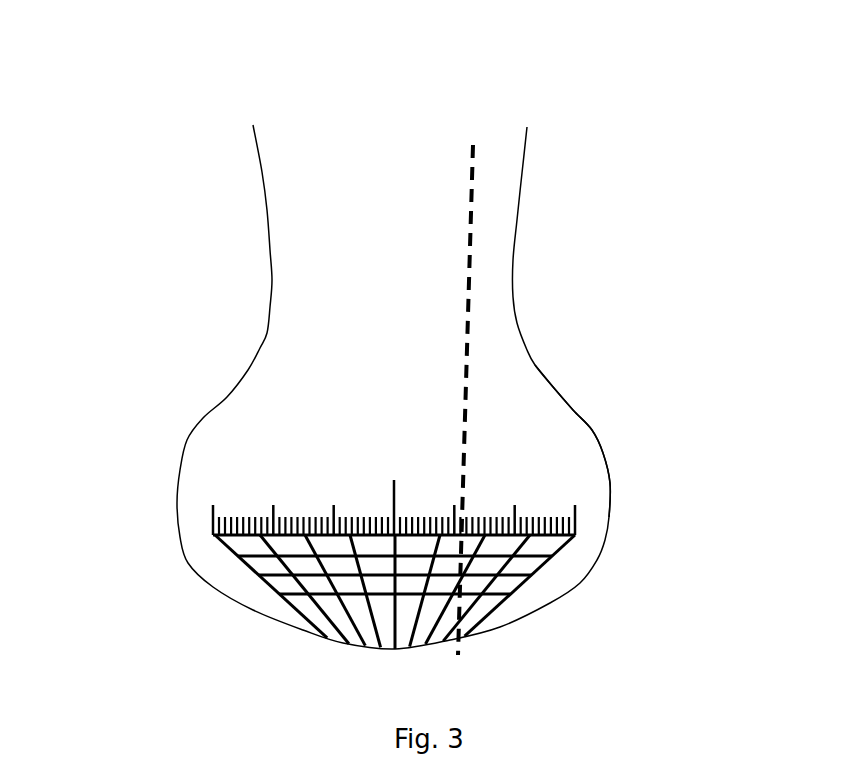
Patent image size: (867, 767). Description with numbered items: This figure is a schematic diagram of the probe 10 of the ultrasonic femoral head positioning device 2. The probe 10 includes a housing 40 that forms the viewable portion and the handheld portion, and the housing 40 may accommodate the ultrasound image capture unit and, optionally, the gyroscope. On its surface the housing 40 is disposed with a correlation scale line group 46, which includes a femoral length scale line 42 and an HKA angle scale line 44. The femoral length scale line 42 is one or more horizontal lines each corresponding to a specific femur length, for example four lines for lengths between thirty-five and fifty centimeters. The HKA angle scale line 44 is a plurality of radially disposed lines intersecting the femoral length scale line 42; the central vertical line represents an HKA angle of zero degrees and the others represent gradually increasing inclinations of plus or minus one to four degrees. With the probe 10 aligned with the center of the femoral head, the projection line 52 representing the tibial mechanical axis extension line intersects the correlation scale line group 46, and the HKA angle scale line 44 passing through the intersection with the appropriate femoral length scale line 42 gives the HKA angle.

The ultrasonic femoral head positioning device 2 is at (56, 68).
The probe 10 is at (224, 195).
The housing 40 is at (530, 375).
The femoral length scale line 42 is at (545, 565).
The HKA angle scale line 44 is at (567, 553).
The correlation scale line group 46 is at (728, 522).
The projection line 52 is at (473, 202).